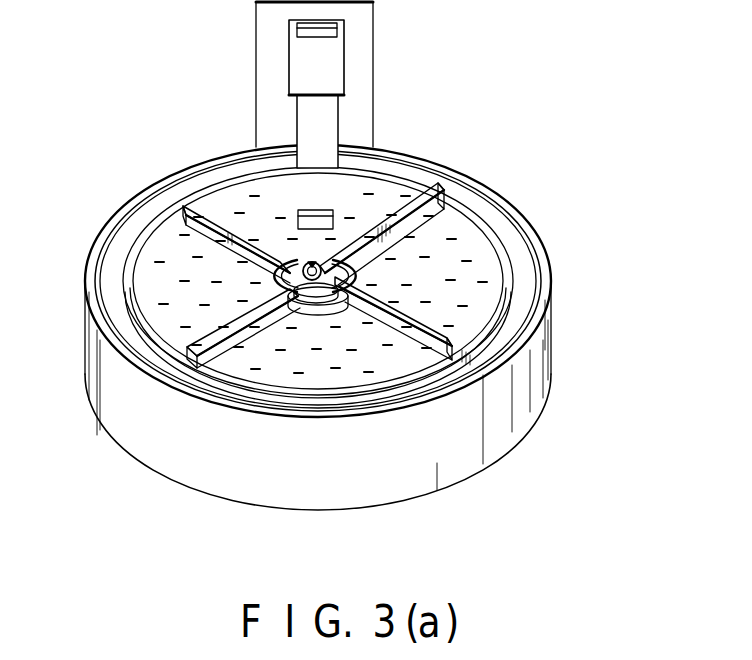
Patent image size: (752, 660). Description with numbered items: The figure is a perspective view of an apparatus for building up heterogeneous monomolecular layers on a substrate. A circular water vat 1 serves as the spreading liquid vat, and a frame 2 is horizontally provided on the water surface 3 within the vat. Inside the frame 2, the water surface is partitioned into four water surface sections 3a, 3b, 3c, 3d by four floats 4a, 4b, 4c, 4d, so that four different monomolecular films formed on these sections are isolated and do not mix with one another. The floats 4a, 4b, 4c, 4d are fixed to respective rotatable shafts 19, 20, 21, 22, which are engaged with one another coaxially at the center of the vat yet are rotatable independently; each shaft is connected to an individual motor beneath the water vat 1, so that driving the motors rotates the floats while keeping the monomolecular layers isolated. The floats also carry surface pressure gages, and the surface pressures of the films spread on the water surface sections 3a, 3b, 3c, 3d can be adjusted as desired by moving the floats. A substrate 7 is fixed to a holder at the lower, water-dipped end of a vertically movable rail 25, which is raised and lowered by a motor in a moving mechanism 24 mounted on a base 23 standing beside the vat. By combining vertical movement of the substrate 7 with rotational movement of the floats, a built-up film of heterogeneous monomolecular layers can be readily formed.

The circular water vat 1 is at (553, 324).
The frame 2 is at (528, 252).
The water surface 3 is at (527, 283).
The water surface section 3a is at (380, 200).
The water surface section 3b is at (505, 253).
The water surface section 3c is at (387, 362).
The water surface section 3d is at (160, 290).
The float 4a is at (443, 172).
The float 4b is at (457, 340).
The float 4c is at (207, 355).
The float 4d is at (183, 205).
The substrate 7 is at (328, 211).
The rotatable shaft 19 is at (305, 264).
The rotatable shaft 20 is at (300, 312).
The rotatable shaft 21 is at (312, 318).
The rotatable shaft 22 is at (277, 273).
The base 23 is at (374, 44).
The moving mechanism 24 is at (300, 80).
The vertically movable rail 25 is at (305, 127).